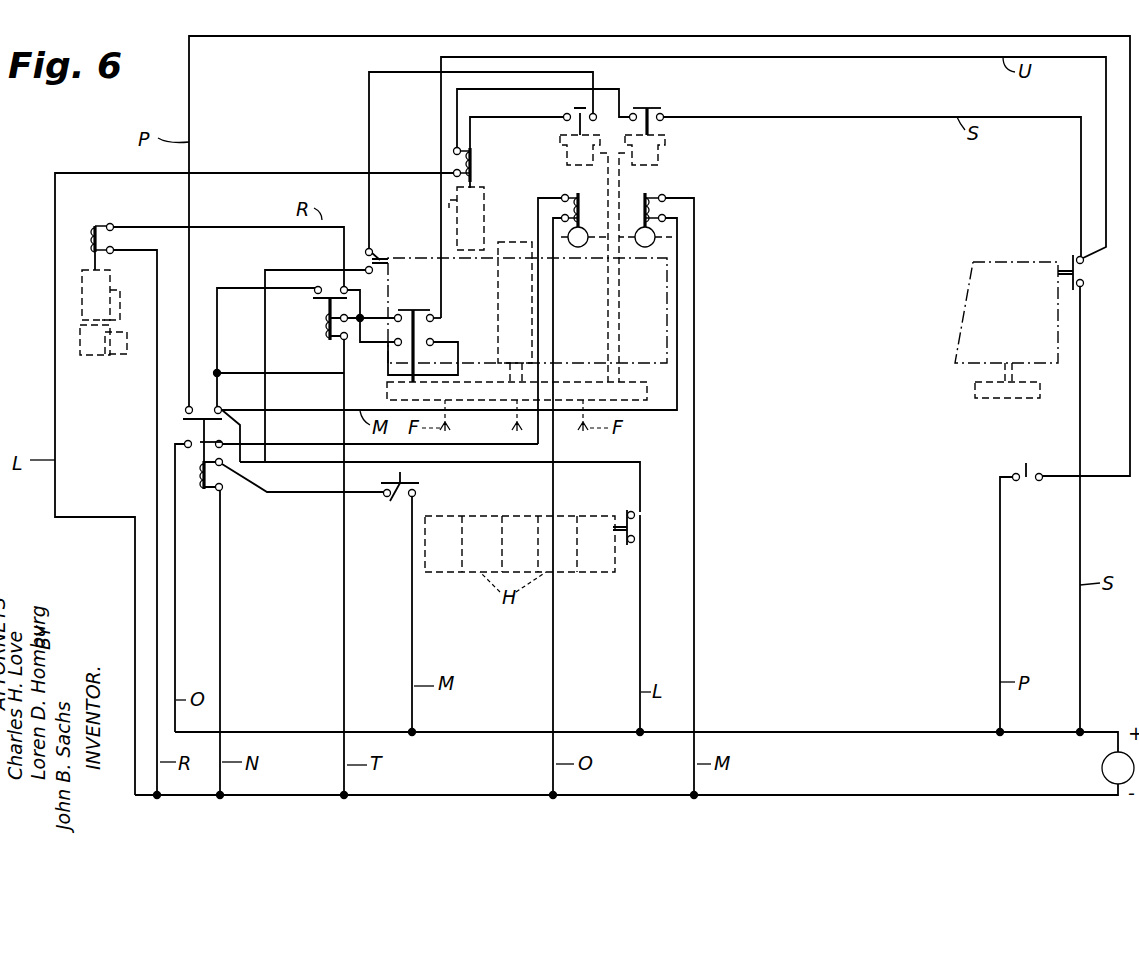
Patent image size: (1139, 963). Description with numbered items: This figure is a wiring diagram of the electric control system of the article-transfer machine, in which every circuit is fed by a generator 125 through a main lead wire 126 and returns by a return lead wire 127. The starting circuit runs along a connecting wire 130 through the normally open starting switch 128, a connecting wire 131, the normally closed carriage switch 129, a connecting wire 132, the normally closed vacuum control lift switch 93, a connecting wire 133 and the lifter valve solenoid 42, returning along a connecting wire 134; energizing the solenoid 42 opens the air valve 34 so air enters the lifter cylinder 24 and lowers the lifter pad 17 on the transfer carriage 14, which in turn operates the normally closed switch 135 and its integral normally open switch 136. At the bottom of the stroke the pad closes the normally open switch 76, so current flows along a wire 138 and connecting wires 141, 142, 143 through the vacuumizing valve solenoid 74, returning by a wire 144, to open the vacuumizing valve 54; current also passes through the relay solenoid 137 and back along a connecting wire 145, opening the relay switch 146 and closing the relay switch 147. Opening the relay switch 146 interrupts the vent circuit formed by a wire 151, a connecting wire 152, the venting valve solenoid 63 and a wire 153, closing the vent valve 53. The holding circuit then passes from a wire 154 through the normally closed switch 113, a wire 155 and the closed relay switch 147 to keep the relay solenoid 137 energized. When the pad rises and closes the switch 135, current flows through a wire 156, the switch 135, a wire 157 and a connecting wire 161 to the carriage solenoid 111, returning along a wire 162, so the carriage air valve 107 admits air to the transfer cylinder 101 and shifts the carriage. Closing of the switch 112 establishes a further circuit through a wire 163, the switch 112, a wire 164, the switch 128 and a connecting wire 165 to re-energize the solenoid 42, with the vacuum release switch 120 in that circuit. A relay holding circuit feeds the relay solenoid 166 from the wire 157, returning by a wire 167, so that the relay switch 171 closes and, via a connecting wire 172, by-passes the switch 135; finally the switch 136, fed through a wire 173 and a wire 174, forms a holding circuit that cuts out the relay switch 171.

The transfer carriage 14 is at (666, 322).
The lifter pad 17 is at (637, 390).
The lifter cylinder 24 is at (510, 242).
The air valve 34 is at (466, 218).
The lifter valve solenoid 42 is at (474, 157).
The vent valve 53 is at (578, 247).
The vacuumizing valve 54 is at (645, 247).
The venting valve solenoid 63 is at (598, 192).
The vacuumizing valve solenoid 74 is at (648, 202).
The normally open switch 76 is at (396, 495).
The vacuum control lift switch 93 is at (580, 110).
The transfer cylinder 101 is at (95, 362).
The carriage air valve 107 is at (110, 297).
The carriage solenoid 111 is at (91, 234).
The switch 112 is at (1082, 263).
The normally closed switch 113 is at (1030, 483).
The vacuum release switch 120 is at (651, 108).
The generator 125 is at (1102, 768).
The main lead wire 126 is at (860, 732).
The return lead wire 127 is at (890, 794).
The starting switch 128 is at (633, 527).
The carriage switch 129 is at (368, 258).
The connecting wire 130 is at (640, 604).
The connecting wire 131 is at (265, 362).
The connecting wire 132 is at (369, 80).
The connecting wire 133 is at (541, 115).
The connecting wire 134 is at (318, 172).
The normally closed switch 135 is at (428, 340).
The normally open switch 136 is at (409, 308).
The relay solenoid 137 is at (200, 482).
The wire 138 is at (413, 644).
The connecting wire 141 is at (280, 496).
The connecting wire 142 is at (242, 472).
The connecting wire 143 is at (284, 418).
The wire 144 is at (694, 572).
The connecting wire 145 is at (220, 676).
The relay switch 146 is at (194, 440).
The relay switch 147 is at (202, 418).
The wire 151 is at (175, 638).
The connecting wire 152 is at (500, 442).
The wire 153 is at (553, 634).
The wire 154 is at (1000, 590).
The wire 155 is at (189, 100).
The wire 156 is at (219, 392).
The wire 157 is at (248, 522).
The connecting wire 161 is at (261, 227).
The wire 162 is at (157, 400).
The wire 163 is at (1080, 400).
The wire 164 is at (850, 117).
The connecting wire 165 is at (536, 94).
The relay solenoid 166 is at (326, 326).
The wire 167 is at (345, 620).
The relay switch 171 is at (330, 284).
The connecting wire 172 is at (217, 340).
The wire 173 is at (905, 57).
The wire 174 is at (368, 318).